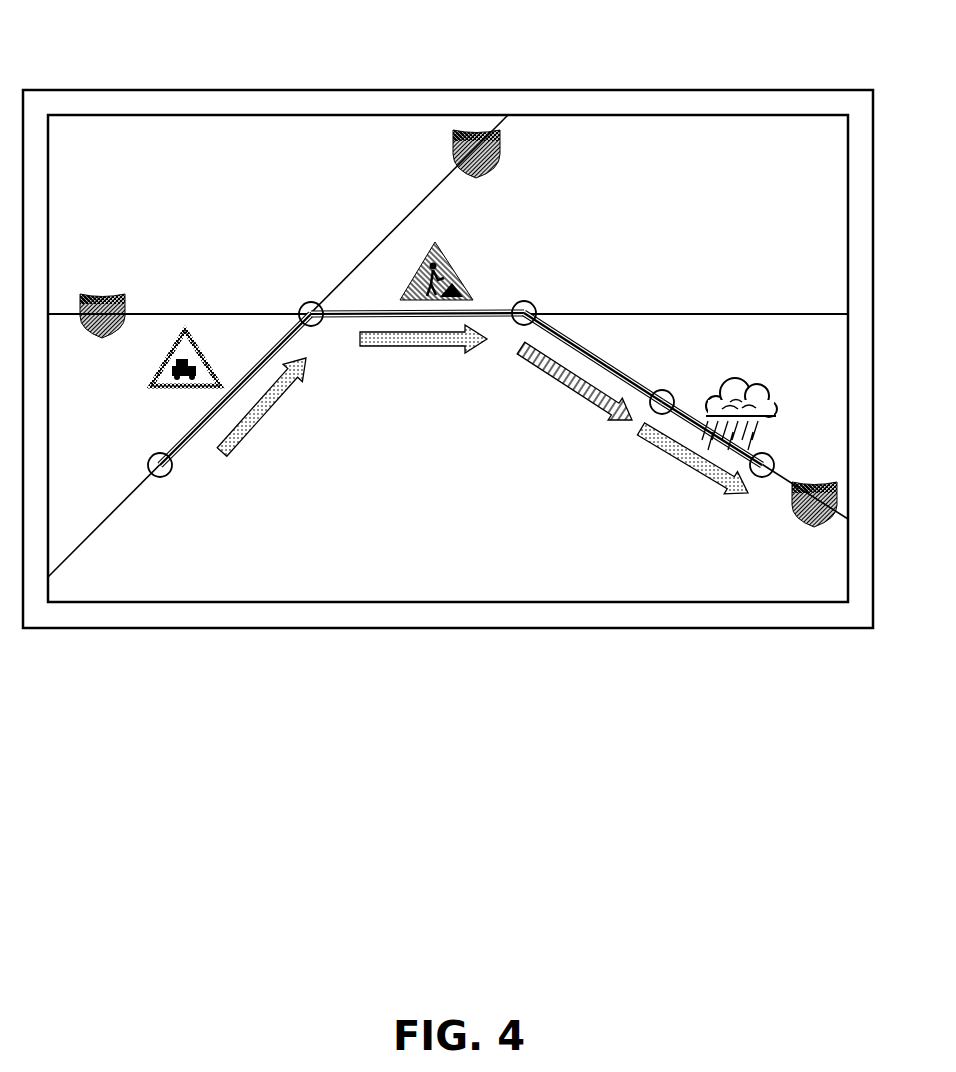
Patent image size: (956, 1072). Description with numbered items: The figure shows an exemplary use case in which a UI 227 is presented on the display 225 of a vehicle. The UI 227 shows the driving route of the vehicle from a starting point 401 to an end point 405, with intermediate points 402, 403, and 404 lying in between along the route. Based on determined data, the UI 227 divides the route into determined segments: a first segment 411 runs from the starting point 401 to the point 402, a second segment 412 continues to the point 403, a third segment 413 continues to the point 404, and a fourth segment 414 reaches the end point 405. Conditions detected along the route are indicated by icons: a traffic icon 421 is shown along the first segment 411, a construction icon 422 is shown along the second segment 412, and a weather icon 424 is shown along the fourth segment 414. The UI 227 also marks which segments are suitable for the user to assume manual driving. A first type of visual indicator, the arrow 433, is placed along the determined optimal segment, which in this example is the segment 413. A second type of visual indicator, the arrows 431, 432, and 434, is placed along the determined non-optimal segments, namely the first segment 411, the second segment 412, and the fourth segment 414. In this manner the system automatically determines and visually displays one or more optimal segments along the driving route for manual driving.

The display 225 is at (148, 89).
The UI 227 is at (330, 101).
The starting point 401 is at (178, 489).
The point 402 is at (293, 297).
The point 403 is at (538, 292).
The point 404 is at (675, 384).
The end point 405 is at (781, 450).
The first segment 411 is at (171, 430).
The second segment 412 is at (485, 297).
The segment 413 is at (615, 350).
The fourth segment 414 is at (692, 398).
The traffic icon 421 is at (155, 375).
The construction icon 422 is at (442, 248).
The weather icon 424 is at (770, 407).
The arrow 431 is at (263, 413).
The arrow 432 is at (407, 350).
The arrow 433 is at (563, 382).
The arrow 434 is at (697, 467).